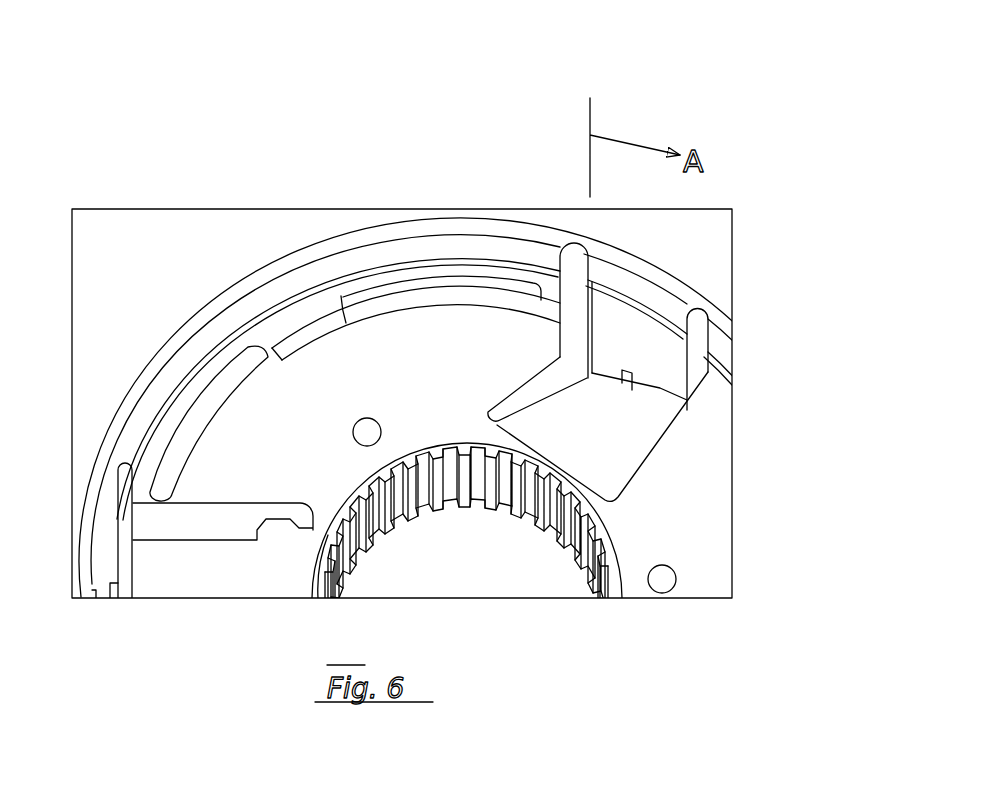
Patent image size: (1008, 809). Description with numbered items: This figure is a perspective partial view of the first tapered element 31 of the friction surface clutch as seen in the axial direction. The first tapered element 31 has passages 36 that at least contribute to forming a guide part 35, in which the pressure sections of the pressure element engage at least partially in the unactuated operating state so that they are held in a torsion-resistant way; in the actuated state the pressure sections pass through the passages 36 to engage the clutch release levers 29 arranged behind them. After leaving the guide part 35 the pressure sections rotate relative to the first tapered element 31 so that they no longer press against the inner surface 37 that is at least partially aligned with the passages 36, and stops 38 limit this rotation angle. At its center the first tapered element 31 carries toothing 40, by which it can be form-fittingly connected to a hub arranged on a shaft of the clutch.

The clutch release lever 29 is at (413, 300).
The first tapered element 31 is at (707, 535).
The guide part 35 is at (615, 400).
The passage 36 is at (620, 432).
The inner surface 37 is at (427, 343).
The stop 38 is at (340, 300).
The toothing 40 is at (455, 523).